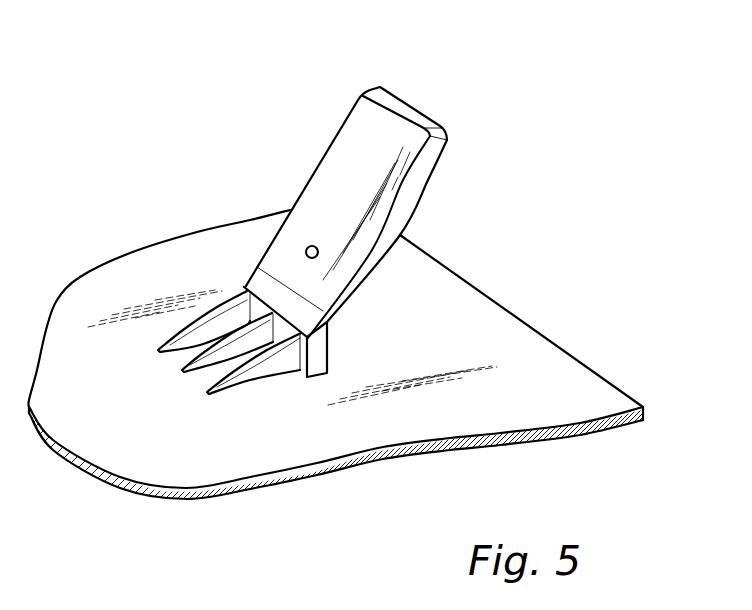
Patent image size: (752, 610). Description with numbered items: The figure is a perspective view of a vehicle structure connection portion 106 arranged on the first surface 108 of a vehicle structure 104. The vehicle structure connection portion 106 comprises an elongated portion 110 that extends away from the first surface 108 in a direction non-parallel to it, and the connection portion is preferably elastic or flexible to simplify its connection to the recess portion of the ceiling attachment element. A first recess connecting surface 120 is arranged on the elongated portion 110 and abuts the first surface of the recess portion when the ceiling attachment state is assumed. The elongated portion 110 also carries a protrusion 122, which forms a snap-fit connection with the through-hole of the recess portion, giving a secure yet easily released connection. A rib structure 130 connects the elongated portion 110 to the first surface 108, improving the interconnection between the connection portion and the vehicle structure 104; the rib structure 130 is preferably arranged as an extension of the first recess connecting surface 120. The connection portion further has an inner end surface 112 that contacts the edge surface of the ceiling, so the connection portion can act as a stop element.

The vehicle structure 104 is at (113, 477).
The vehicle structure connection portion 106 is at (443, 82).
The first surface 108 is at (555, 387).
The elongated portion 110 is at (383, 198).
The inner end surface 112 is at (327, 353).
The first recess connecting surface 120 is at (343, 154).
The protrusion 122 is at (303, 248).
The rib structure 130 is at (277, 368).